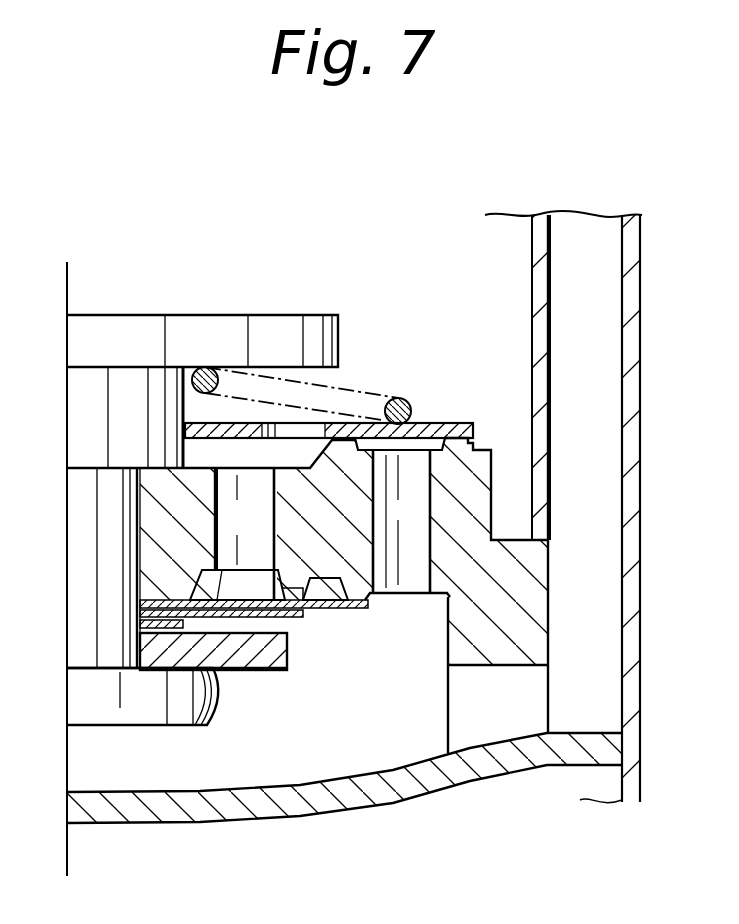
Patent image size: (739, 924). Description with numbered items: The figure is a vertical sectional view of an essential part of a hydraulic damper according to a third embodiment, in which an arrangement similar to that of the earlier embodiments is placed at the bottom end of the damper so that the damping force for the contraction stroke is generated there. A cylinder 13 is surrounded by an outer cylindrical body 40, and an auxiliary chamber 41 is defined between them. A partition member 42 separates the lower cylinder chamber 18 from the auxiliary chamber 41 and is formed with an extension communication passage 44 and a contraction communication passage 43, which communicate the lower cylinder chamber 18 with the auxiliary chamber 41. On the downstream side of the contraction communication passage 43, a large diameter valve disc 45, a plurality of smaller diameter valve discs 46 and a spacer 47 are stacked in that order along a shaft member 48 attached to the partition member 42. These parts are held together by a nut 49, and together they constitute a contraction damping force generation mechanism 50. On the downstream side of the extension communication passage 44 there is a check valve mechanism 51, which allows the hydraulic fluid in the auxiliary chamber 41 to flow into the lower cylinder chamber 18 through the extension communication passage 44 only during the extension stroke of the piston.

The cylinder 13 is at (545, 328).
The lower cylinder chamber 18 is at (518, 243).
The outer cylindrical body 40 is at (633, 382).
The auxiliary chamber 41 is at (603, 435).
The partition member 42 is at (527, 583).
The contraction communication passage 43 is at (233, 507).
The extension communication passage 44 is at (420, 503).
The large diameter valve disc 45 is at (366, 601).
The smaller diameter valve disc 46 is at (292, 620).
The spacer 47 is at (163, 638).
The shaft member 48 is at (90, 566).
The nut 49 is at (95, 712).
The contraction damping force generation mechanism 50 is at (341, 624).
The check valve mechanism 51 is at (436, 412).